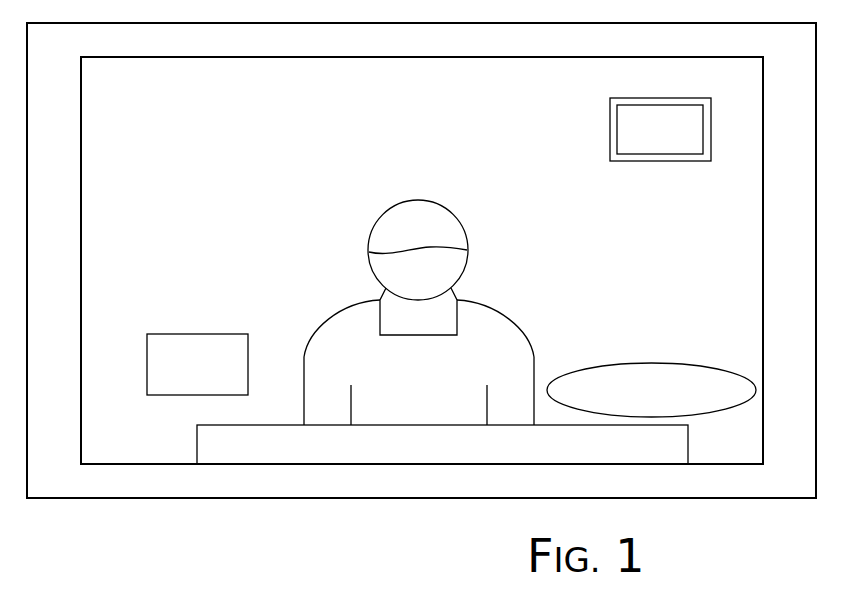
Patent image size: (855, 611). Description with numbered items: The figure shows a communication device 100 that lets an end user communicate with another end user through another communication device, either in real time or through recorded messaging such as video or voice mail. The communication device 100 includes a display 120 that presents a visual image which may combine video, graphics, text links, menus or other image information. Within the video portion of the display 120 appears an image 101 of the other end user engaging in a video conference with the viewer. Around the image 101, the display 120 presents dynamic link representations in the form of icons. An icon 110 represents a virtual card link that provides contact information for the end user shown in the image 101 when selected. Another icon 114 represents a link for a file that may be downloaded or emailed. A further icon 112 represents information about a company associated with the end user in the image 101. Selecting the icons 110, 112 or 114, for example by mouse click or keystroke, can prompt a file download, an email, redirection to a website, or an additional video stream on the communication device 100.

The communication device 100 is at (378, 525).
The image 101 is at (342, 272).
The icon 110 is at (198, 333).
The icon 112 is at (655, 363).
The icon 114 is at (610, 128).
The display 120 is at (135, 433).